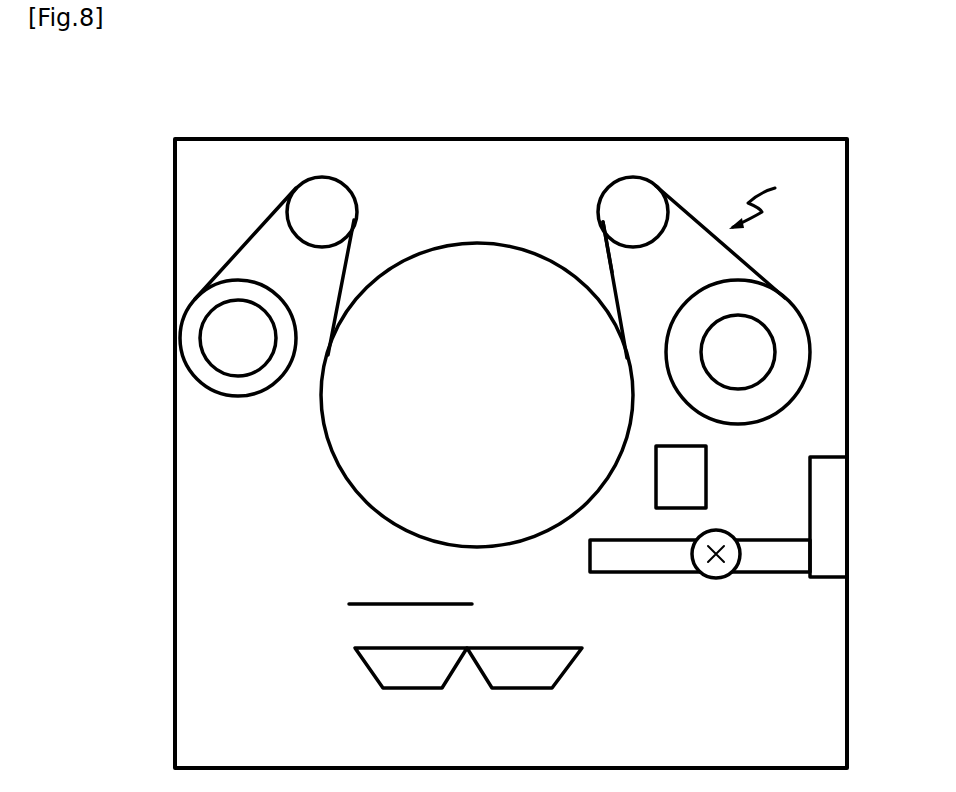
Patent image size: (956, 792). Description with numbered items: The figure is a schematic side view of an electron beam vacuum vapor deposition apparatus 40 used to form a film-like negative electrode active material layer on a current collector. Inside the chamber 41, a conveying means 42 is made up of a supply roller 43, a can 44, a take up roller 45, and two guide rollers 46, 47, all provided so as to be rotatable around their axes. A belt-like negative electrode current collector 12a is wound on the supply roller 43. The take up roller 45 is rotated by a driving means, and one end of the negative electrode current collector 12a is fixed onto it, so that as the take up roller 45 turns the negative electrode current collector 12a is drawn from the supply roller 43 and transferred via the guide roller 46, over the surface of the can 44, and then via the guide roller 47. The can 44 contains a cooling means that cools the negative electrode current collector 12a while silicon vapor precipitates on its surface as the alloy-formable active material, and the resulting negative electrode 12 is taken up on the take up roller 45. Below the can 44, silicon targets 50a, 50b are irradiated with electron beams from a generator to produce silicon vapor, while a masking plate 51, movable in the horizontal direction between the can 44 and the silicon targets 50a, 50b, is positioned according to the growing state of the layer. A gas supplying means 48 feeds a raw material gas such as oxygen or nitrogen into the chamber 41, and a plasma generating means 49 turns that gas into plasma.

The electron beam vacuum vapor deposition apparatus 40 is at (210, 109).
The chamber 41 is at (428, 139).
The negative electrode 12 is at (212, 273).
The negative electrode current collector 12a is at (607, 267).
The conveying means 42 is at (773, 199).
The supply roller 43 is at (742, 348).
The can 44 is at (458, 322).
The take up roller 45 is at (232, 387).
The guide roller 46 is at (633, 203).
The guide roller 47 is at (337, 208).
The gas supplying means 48 is at (663, 555).
The plasma generating means 49 is at (687, 485).
The silicon target 50a is at (523, 665).
The silicon target 50b is at (413, 667).
The masking plate 51 is at (373, 606).